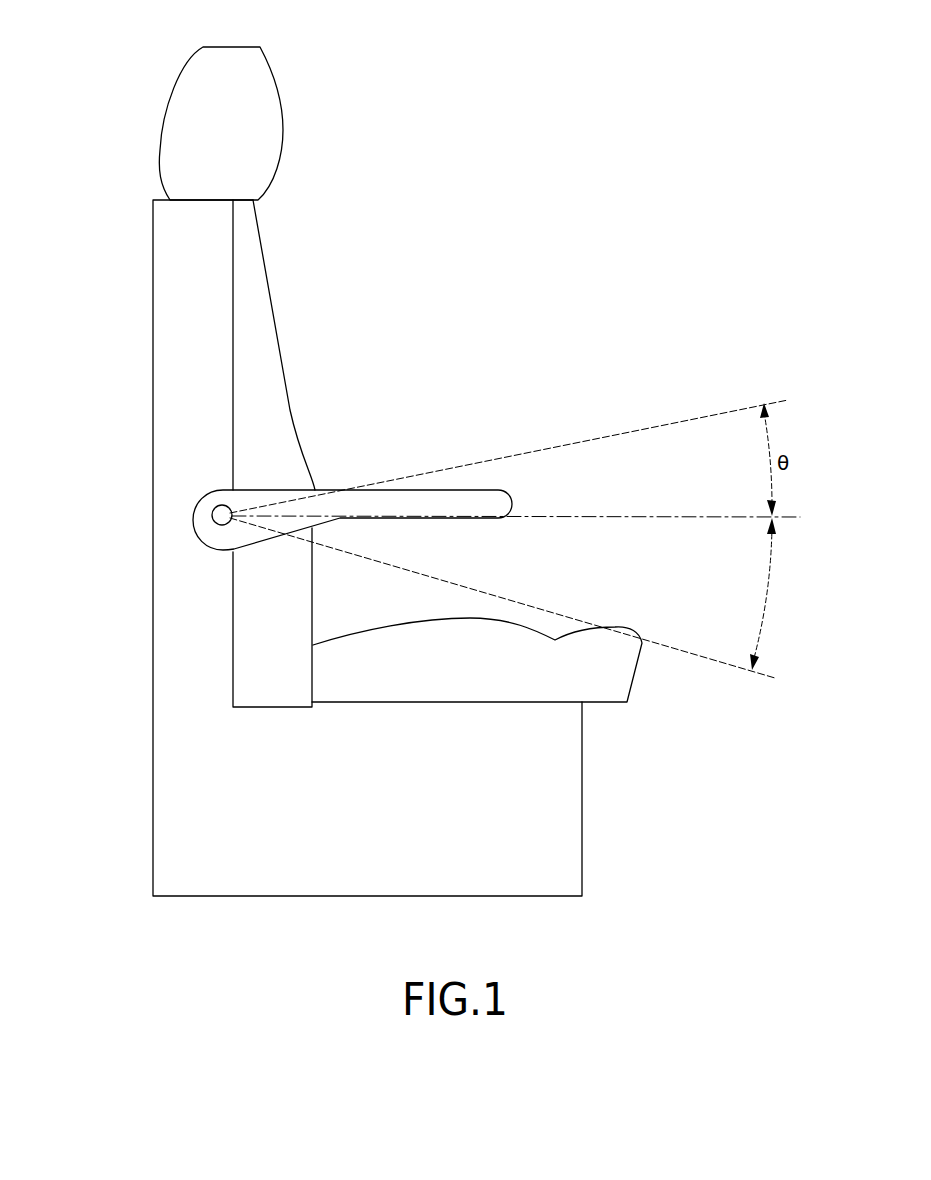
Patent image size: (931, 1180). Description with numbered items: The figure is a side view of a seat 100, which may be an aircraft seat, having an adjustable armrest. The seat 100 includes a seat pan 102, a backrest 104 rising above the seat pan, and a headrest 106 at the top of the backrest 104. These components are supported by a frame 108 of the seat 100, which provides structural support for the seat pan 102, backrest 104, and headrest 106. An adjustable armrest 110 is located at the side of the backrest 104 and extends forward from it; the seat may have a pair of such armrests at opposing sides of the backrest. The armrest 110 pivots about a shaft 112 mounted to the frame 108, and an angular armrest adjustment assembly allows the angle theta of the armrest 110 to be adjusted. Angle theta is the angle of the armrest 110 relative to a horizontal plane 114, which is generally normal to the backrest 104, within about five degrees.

The seat 100 is at (640, 208).
The seat pan 102 is at (613, 658).
The backrest 104 is at (257, 335).
The headrest 106 is at (263, 112).
The frame 108 is at (166, 393).
The adjustable armrest 110 is at (418, 500).
The shaft 112 is at (212, 547).
The horizontal plane 114 is at (648, 518).